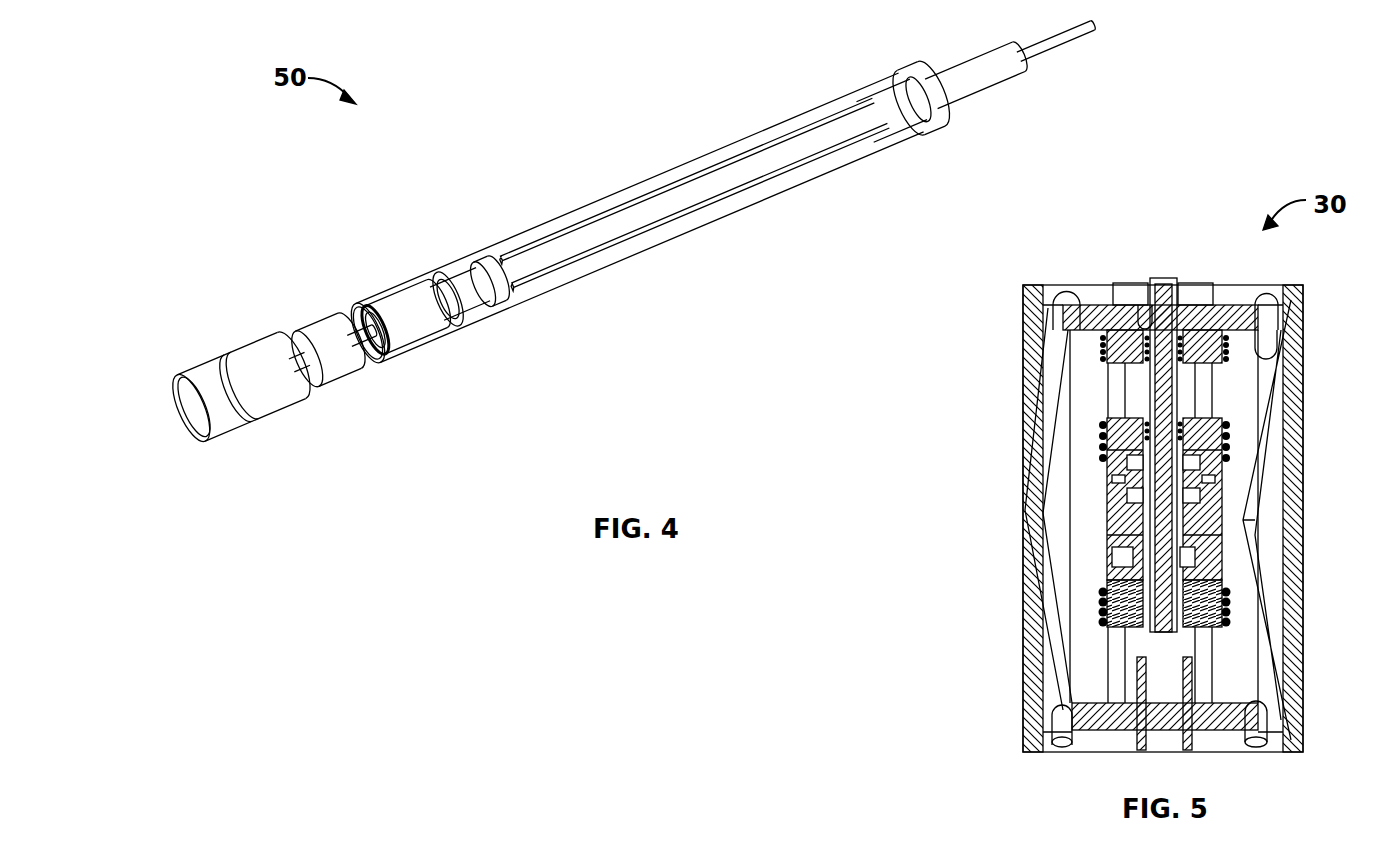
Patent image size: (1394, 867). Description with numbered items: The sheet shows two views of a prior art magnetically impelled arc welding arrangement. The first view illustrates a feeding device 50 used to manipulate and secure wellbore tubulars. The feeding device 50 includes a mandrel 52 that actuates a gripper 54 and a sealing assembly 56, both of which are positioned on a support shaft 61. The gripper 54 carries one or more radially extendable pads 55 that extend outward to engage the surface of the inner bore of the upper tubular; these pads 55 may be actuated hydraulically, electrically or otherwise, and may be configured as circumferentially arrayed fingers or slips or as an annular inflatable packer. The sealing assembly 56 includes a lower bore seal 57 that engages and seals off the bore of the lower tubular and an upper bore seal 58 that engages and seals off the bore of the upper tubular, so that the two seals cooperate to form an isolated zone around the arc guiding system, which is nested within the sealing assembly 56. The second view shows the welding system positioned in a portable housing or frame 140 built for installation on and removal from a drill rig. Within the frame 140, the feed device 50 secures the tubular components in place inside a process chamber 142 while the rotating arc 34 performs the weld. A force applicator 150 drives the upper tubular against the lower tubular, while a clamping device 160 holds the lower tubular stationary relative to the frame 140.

In FIG. 4, the feeding device 50 is at (347, 368).
In FIG. 4, the mandrel 52 is at (980, 93).
In FIG. 4, the gripper 54 is at (626, 260).
In FIG. 4, the radially extendable pads 55 is at (720, 178).
In FIG. 4, the sealing assembly 56 is at (235, 366).
In FIG. 4, the lower bore seal 57 is at (252, 430).
In FIG. 4, the upper bore seal 58 is at (458, 333).
In FIG. 4, the support shaft 61 is at (890, 122).
In FIG. 5, the arc 34 is at (1226, 465).
In FIG. 5, the frame 140 is at (1300, 296).
In FIG. 5, the process chamber 142 is at (1215, 383).
In FIG. 5, the force applicator 150 is at (1212, 342).
In FIG. 5, the clamping device 160 is at (1187, 592).